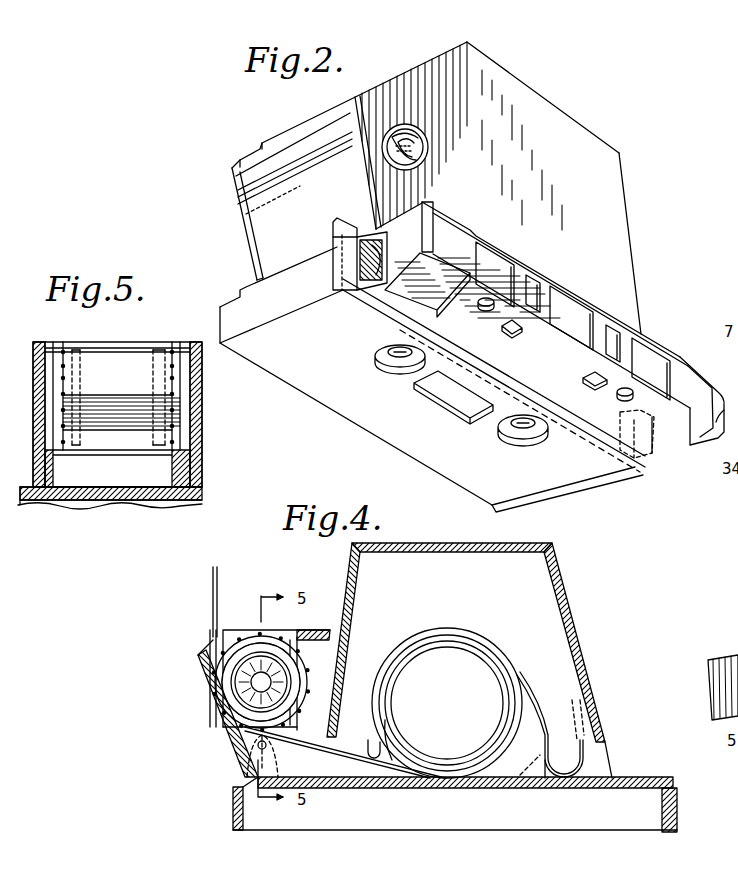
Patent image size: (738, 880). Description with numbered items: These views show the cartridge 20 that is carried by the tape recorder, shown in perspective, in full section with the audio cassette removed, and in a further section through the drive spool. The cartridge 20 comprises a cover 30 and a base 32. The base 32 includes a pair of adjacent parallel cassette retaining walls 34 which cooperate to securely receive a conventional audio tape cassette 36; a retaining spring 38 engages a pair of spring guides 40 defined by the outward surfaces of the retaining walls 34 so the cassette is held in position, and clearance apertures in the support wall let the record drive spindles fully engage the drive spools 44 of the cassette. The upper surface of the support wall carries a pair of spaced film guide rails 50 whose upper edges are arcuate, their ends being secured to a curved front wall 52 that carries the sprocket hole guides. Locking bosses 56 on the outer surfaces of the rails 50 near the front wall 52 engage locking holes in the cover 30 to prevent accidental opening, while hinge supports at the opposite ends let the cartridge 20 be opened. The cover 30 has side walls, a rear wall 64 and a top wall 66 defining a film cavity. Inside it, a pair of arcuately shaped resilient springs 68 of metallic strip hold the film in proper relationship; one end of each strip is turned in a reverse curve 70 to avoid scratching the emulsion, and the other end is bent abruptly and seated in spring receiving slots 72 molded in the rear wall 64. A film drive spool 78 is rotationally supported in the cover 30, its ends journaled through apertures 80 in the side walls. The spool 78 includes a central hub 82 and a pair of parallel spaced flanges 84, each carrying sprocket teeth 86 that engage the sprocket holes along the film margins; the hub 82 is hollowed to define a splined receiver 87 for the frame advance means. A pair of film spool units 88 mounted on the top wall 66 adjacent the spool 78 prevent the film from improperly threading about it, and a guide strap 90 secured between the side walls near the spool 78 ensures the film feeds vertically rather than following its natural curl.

In FIG. 2, the cartridge 20 is at (644, 174).
In FIG. 2, the cover 30 is at (585, 128).
In FIG. 4, the cover 30 is at (556, 552).
In FIG. 4, the base 32 is at (679, 788).
In FIG. 2, the cassette retaining walls 34 is at (431, 379).
In FIG. 4, the cassette retaining walls 34 is at (232, 805).
In FIG. 2, the audio tape cassette 36 is at (642, 330).
In FIG. 2, the retaining spring 38 is at (645, 470).
In FIG. 2, the spring guides 40 is at (347, 290).
In FIG. 2, the drive spools 44 is at (392, 366).
In FIG. 5, the film guide rails 50 is at (55, 465).
In FIG. 2, the front wall 52 is at (292, 206).
In FIG. 4, the front wall 52 is at (210, 700).
In FIG. 5, the locking bosses 56 is at (48, 480).
In FIG. 4, the locking bosses 56 is at (268, 756).
In FIG. 4, the rear wall 64 is at (590, 678).
In FIG. 4, the top wall 66 is at (460, 542).
In FIG. 4, the resilient springs 68 is at (528, 695).
In FIG. 4, the reverse curve 70 is at (370, 752).
In FIG. 4, the spring receiving slots 72 is at (592, 752).
In FIG. 2, the film drive spool 78 is at (424, 154).
In FIG. 4, the film drive spool 78 is at (245, 630).
In FIG. 2, the apertures 80 is at (414, 126).
In FIG. 5, the apertures 80 is at (202, 380).
In FIG. 5, the central hub 82 is at (121, 396).
In FIG. 2, the flanges 84 is at (737, 226).
In FIG. 5, the flanges 84 is at (52, 350).
In FIG. 4, the flanges 84 is at (284, 648).
In FIG. 2, the sprocket teeth 86 is at (737, 249).
In FIG. 5, the sprocket teeth 86 is at (66, 372).
In FIG. 4, the sprocket teeth 86 is at (222, 730).
In FIG. 4, the splined receiver 87 is at (218, 748).
In FIG. 5, the film spool units 88 is at (78, 430).
In FIG. 4, the film spool units 88 is at (340, 652).
In FIG. 2, the guide strap 90 is at (303, 127).
In FIG. 5, the guide strap 90 is at (112, 345).